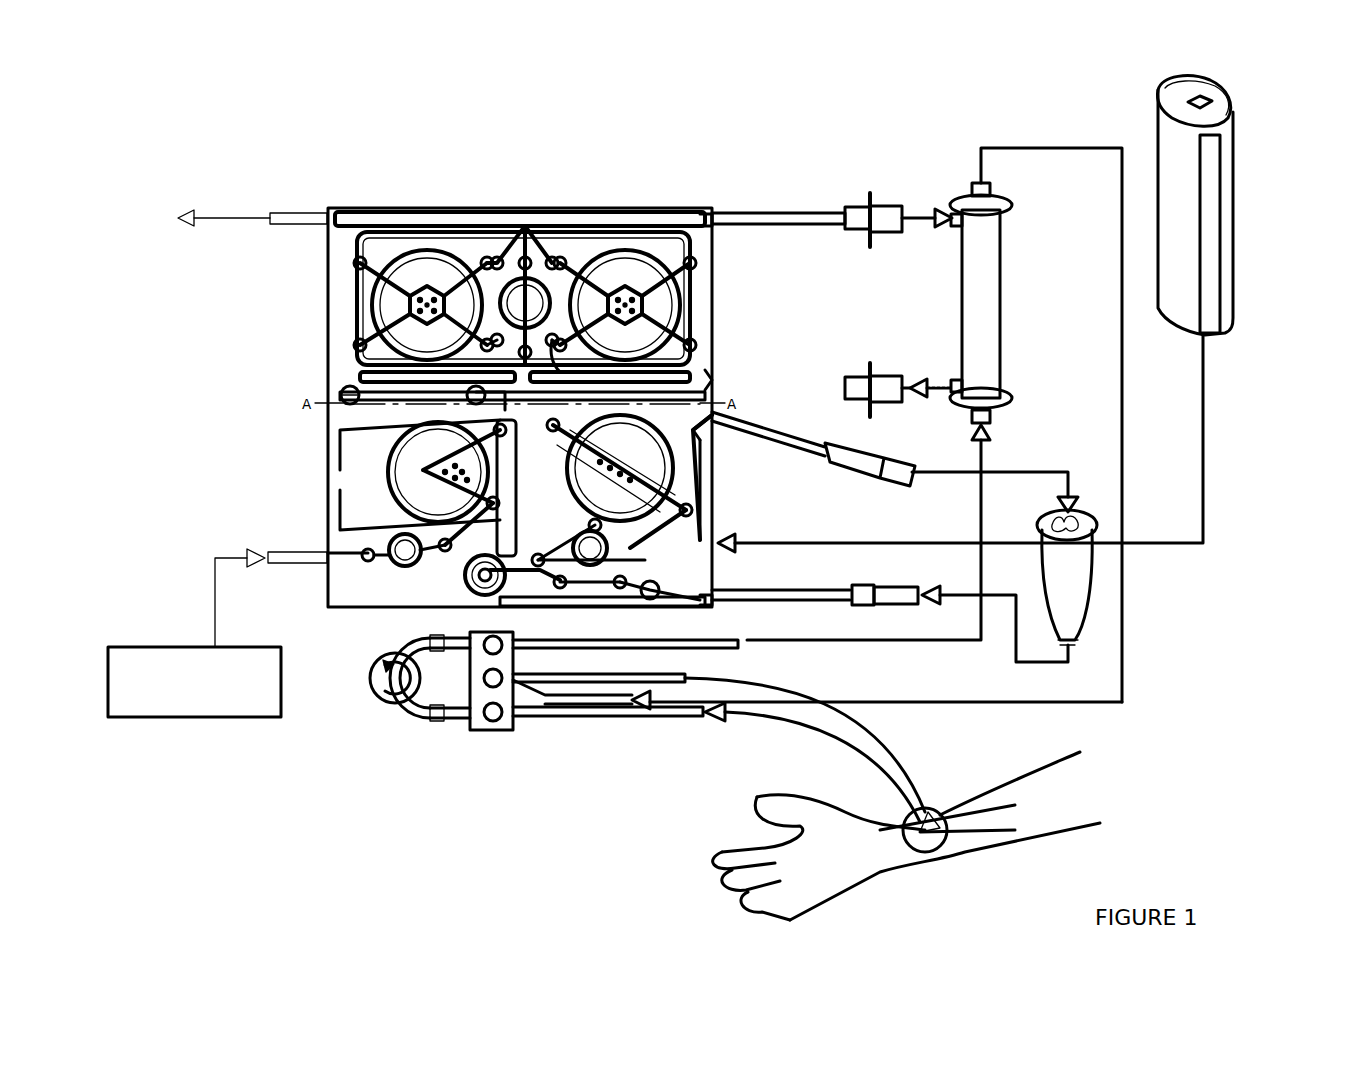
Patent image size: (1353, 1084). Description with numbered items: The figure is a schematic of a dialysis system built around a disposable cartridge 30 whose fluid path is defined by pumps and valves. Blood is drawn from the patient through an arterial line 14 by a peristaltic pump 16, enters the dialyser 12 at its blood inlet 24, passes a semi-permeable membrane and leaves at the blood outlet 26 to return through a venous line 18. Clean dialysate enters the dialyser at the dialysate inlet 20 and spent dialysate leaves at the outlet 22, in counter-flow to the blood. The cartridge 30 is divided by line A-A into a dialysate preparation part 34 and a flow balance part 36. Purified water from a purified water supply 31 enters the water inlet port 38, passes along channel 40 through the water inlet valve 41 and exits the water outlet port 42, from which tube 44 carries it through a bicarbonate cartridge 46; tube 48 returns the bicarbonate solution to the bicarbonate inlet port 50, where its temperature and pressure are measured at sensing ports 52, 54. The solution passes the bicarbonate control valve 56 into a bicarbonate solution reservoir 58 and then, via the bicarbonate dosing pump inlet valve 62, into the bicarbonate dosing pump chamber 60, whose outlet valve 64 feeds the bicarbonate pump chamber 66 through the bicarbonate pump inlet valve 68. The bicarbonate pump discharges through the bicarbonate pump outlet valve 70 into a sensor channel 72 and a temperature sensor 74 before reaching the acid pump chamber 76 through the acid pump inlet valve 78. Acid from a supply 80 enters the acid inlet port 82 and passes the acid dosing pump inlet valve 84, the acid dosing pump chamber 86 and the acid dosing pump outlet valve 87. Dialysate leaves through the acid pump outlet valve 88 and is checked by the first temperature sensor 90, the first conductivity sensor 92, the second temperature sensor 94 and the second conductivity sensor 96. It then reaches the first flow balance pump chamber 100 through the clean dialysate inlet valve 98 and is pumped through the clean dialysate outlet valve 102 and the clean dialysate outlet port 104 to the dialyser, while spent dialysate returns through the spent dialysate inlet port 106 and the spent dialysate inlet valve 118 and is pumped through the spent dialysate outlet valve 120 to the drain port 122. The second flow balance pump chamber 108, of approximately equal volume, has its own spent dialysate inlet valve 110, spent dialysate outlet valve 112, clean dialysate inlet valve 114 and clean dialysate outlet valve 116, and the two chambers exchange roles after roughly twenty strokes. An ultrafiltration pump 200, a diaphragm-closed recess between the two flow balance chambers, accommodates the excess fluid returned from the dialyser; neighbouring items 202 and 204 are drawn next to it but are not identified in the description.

The dialyser 12 is at (995, 352).
The arterial line 14 is at (940, 645).
The peristaltic pump 16 is at (370, 688).
The venous line 18 is at (928, 750).
The dialysate solution inlet 20 is at (952, 222).
The dialysate solution outlet 22 is at (955, 380).
The blood inlet 24 is at (990, 420).
The blood outlet 26 is at (985, 190).
The cartridge 30 is at (340, 516).
The purified water supply 31 is at (1225, 165).
The dialysate preparation part of the cartridge 34 is at (330, 573).
The flow balance part of the cartridge 36 is at (348, 296).
The water inlet port 38 is at (740, 540).
The channel 40 is at (605, 210).
The water inlet valve 41 is at (705, 440).
The water outlet port 42 is at (712, 430).
The tube 44 is at (770, 440).
The bicarbonate cartridge 46 is at (1080, 568).
The tube 48 is at (805, 590).
The bicarbonate inlet port 50 is at (712, 605).
The sensing port 52 is at (648, 600).
The sensing port 54 is at (620, 590).
The bicarbonate control valve 56 is at (560, 590).
The bicarbonate solution reservoir 58 is at (475, 592).
The bicarbonate dosing pump chamber 60 is at (610, 552).
The bicarbonate dosing pump inlet valve 62 is at (546, 552).
The bicarbonate dosing pump outlet valve 64 is at (650, 555).
The bicarbonate pump chamber 66 is at (690, 478).
The bicarbonate pump inlet valve 68 is at (700, 512).
The bicarbonate pump outlet valve 70 is at (552, 428).
The sensor channel 72 is at (520, 470).
The temperature sensor 74 is at (530, 582).
The acid pump chamber 76 is at (415, 478).
The acid pump inlet valve 78 is at (440, 520).
The supply of acid 80 is at (185, 703).
The acid inlet port 82 is at (350, 550).
The acid dosing pump inlet valve 84 is at (372, 562).
The acid dosing pump chamber 86 is at (405, 568).
The acid dosing pump outlet valve 87 is at (448, 555).
The acid pump outlet valve 88 is at (420, 468).
The first dialysate solution temperature sensor 90 is at (508, 405).
The first dialysate solution conductivity sensor 92 is at (370, 402).
The second dialysate solution temperature sensor 94 is at (345, 392).
The second dialysate solution conductivity sensor 96 is at (365, 376).
The clean dialysate solution inlet valve 98 is at (554, 345).
The first flow balance pump chamber 100 is at (625, 250).
The clean dialysate solution outlet valve 102 is at (690, 265).
The clean dialysate solution outlet port 104 is at (705, 215).
The spent dialysate solution inlet port 106 is at (712, 370).
The second flow balance pump chamber 108 is at (427, 248).
The spent dialysate solution inlet valve 110 is at (358, 344).
The spent dialysate solution outlet valve 112 is at (497, 256).
The clean dialysate solution inlet valve 114 is at (487, 346).
The clean dialysate solution outlet valve 116 is at (358, 262).
The spent dialysate solution inlet valve 118 is at (695, 342).
The spent dialysate solution outlet valve 120 is at (525, 240).
The drain port 122 is at (335, 210).
The ultrafiltration pump 200 is at (522, 258).
The valve 202 is at (553, 258).
The valve 204 is at (550, 258).